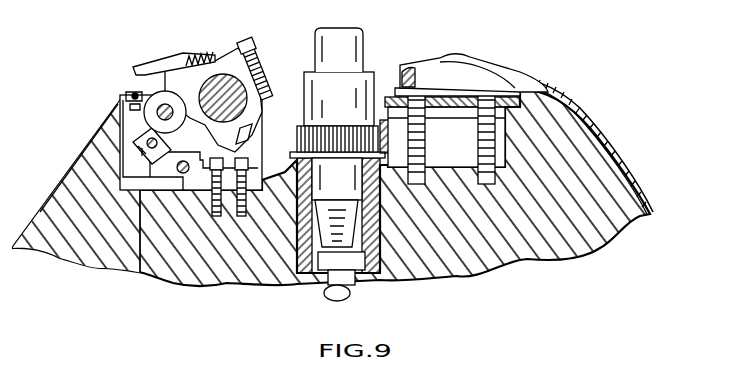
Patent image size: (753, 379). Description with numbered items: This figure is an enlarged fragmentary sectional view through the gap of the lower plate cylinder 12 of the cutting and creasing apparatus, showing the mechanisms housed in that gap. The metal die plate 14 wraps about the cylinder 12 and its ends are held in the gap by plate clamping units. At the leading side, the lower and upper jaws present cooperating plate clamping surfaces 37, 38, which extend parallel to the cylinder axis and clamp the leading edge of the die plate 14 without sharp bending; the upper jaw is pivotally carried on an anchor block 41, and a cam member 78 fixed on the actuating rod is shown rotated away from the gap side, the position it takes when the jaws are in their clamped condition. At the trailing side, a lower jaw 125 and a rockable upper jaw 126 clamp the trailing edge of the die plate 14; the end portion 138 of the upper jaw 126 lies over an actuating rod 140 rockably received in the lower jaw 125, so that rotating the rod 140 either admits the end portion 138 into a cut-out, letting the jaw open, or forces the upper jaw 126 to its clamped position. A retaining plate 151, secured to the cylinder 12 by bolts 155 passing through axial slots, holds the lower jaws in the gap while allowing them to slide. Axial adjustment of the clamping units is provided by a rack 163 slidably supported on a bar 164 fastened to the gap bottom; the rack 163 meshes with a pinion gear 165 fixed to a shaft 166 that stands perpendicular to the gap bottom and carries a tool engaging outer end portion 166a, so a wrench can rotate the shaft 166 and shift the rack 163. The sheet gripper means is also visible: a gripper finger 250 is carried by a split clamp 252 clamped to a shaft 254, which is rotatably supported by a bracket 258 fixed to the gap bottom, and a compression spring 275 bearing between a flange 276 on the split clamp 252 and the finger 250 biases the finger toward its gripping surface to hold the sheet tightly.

The lower plate cylinder 12 is at (613, 229).
The metal die plate 14 is at (640, 190).
The plates 151 is at (553, 100).
The bolts 155 is at (530, 84).
The anchor block 41 is at (155, 185).
The cam member 78 is at (145, 150).
The flange 276 is at (218, 47).
The brackets 258 is at (257, 125).
The plate clamping surface 37 is at (127, 100).
The plate clamping surface 38 is at (140, 92).
The gripper fingers 250 is at (145, 68).
The compression spring 275 is at (192, 53).
The split clamp 252 is at (253, 48).
The shaft 254 is at (253, 63).
The pinion gear 165 is at (291, 192).
The bar 164 is at (387, 172).
The tool engaging outer end portion 166a is at (350, 43).
The shaft 166 is at (348, 222).
The rack 163 is at (408, 152).
The lower jaw 125 is at (466, 80).
The end portion 138 is at (435, 60).
The upper jaw 126 is at (490, 65).
The actuating rod 140 is at (395, 73).